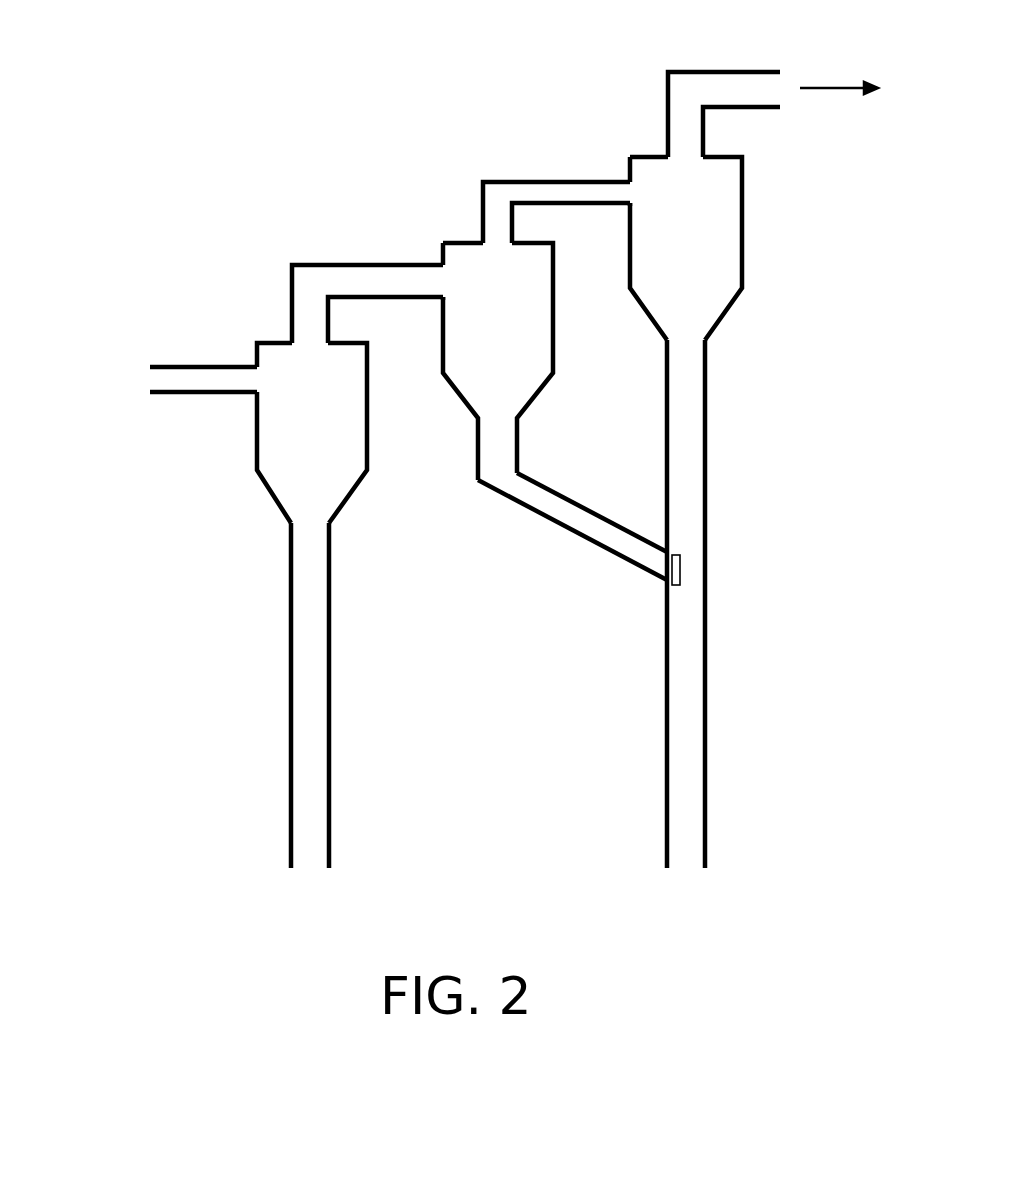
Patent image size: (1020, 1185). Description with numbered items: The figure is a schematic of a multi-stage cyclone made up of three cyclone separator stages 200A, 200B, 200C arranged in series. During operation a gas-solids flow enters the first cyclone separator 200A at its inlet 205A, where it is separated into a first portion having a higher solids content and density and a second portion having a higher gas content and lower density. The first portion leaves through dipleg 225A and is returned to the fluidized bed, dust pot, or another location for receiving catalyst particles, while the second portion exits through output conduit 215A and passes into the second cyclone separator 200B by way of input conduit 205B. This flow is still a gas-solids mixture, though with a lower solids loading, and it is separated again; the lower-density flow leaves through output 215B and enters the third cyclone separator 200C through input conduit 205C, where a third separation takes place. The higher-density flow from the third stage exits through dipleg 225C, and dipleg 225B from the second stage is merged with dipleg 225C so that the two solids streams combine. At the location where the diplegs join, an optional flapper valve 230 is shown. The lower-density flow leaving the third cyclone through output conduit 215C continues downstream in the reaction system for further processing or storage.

The cyclone separator 200A is at (248, 463).
The cyclone separator 200B is at (460, 243).
The cyclone separator 200C is at (750, 210).
The inlet 205A is at (153, 380).
The input conduit 205B is at (413, 263).
The input conduit 205C is at (605, 180).
The output conduit 215A is at (288, 297).
The output 215B is at (483, 185).
The output conduit 215C is at (668, 100).
The dipleg 225A is at (291, 648).
The dipleg 225B is at (497, 490).
The dipleg 225C is at (717, 453).
The flapper valve 230 is at (680, 570).